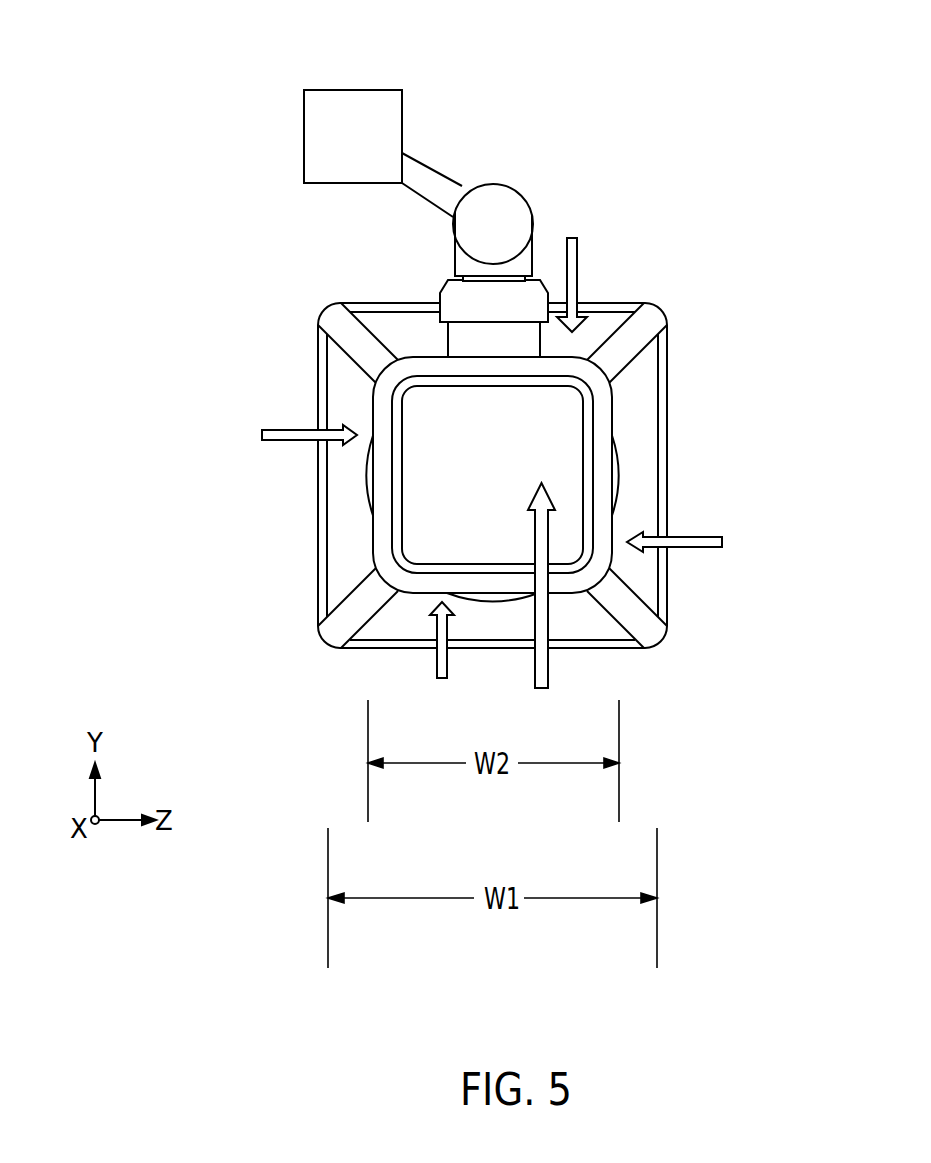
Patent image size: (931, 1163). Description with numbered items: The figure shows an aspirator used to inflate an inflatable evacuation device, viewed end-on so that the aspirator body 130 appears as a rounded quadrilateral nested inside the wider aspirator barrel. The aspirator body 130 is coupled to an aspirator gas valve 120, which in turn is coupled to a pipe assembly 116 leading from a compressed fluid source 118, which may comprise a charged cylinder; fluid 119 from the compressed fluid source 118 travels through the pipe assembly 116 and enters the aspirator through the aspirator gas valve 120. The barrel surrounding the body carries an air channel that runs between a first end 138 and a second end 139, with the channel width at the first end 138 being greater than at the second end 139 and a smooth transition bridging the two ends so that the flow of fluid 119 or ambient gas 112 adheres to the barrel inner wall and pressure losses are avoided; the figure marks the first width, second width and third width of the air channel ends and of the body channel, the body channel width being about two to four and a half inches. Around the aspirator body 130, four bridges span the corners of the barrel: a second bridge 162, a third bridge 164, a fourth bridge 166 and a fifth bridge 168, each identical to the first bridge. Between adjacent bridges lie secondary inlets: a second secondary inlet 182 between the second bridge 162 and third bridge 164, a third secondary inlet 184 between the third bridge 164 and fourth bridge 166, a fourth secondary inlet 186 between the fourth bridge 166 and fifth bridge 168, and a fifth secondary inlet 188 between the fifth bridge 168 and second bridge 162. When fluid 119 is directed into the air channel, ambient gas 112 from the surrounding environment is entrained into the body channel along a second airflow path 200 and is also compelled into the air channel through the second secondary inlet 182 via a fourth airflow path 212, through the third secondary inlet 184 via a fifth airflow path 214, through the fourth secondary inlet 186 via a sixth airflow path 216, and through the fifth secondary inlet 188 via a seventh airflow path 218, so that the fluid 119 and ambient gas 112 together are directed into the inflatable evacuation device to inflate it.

The ambient gas 112 is at (187, 600).
The pipe assembly 116 is at (455, 182).
The compressed fluid source 118 is at (314, 89).
The fluid 119 is at (336, 150).
The aspirator gas valve 120 is at (522, 195).
The aspirator body 130 is at (600, 417).
The first end 138 is at (592, 308).
The second end 139 is at (615, 490).
The second bridge 162 is at (348, 328).
The third bridge 164 is at (338, 635).
The fourth bridge 166 is at (635, 617).
The fifth bridge 168 is at (637, 332).
The second secondary inlet 182 is at (347, 505).
The third secondary inlet 184 is at (580, 622).
The fourth secondary inlet 186 is at (640, 458).
The fifth secondary inlet 188 is at (425, 337).
The second airflow path 200 is at (535, 688).
The fourth airflow path 212 is at (262, 435).
The fifth airflow path 214 is at (437, 672).
The sixth airflow path 216 is at (722, 545).
The seventh airflow path 218 is at (578, 238).